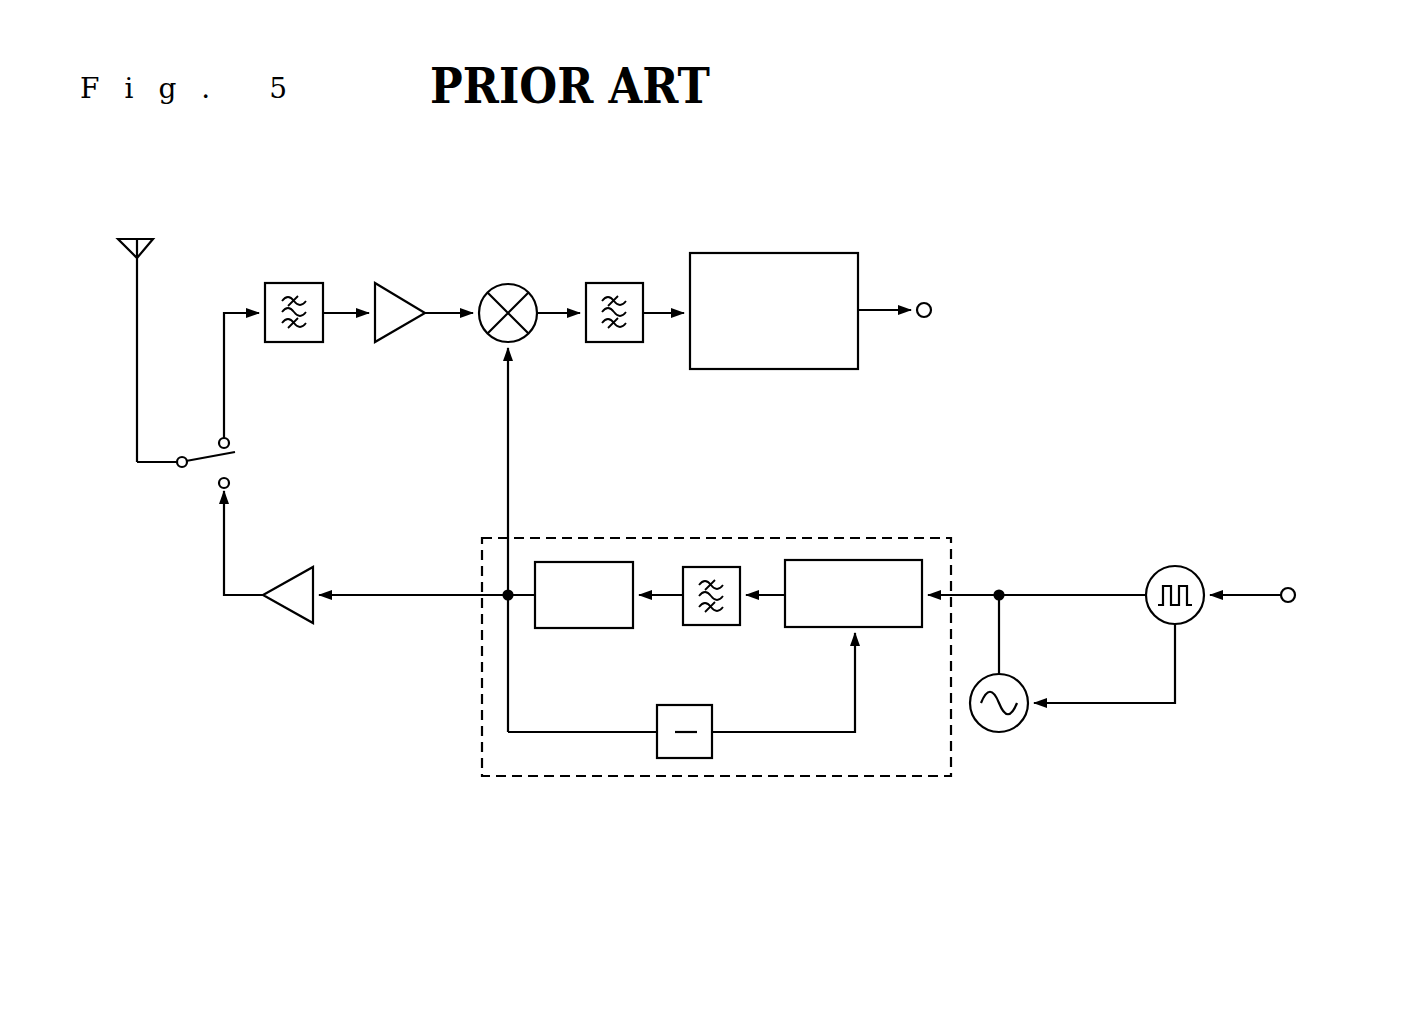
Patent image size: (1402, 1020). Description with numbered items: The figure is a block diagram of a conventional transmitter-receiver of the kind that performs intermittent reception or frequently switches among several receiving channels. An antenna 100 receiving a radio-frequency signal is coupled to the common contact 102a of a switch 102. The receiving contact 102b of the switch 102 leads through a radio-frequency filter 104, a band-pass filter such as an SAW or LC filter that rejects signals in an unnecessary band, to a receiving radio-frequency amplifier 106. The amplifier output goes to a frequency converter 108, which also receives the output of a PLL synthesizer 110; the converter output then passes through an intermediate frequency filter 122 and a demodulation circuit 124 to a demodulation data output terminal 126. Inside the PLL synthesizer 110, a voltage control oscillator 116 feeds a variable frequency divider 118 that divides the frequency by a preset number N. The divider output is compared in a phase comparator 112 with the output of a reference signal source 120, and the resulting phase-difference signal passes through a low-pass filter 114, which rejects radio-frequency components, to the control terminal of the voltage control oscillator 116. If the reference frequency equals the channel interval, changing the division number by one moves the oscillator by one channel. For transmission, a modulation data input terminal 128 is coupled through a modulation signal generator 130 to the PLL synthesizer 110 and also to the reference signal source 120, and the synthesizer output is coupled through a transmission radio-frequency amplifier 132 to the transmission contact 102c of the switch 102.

The antenna 100 is at (148, 238).
The switch 102 is at (201, 451).
The common contact 102a is at (181, 468).
The receiving contact 102b is at (230, 440).
The transmission contact 102c is at (231, 483).
The radio-frequency filter 104 is at (290, 283).
The receiving radio-frequency amplifier 106 is at (395, 285).
The frequency converter 108 is at (505, 285).
The PLL synthesizer 110 is at (540, 778).
The phase comparator 112 is at (838, 560).
The low-pass filter 114 is at (710, 567).
The voltage control oscillator 116 is at (590, 562).
The variable frequency divider 118 is at (690, 760).
The reference signal source 120 is at (1000, 733).
The intermediate frequency filter 122 is at (613, 282).
The demodulation circuit 124 is at (780, 253).
The demodulation data output terminal 126 is at (926, 301).
The modulation data input terminal 128 is at (1290, 588).
The modulation signal generator 130 is at (1180, 566).
The transmission radio-frequency amplifier 132 is at (285, 614).